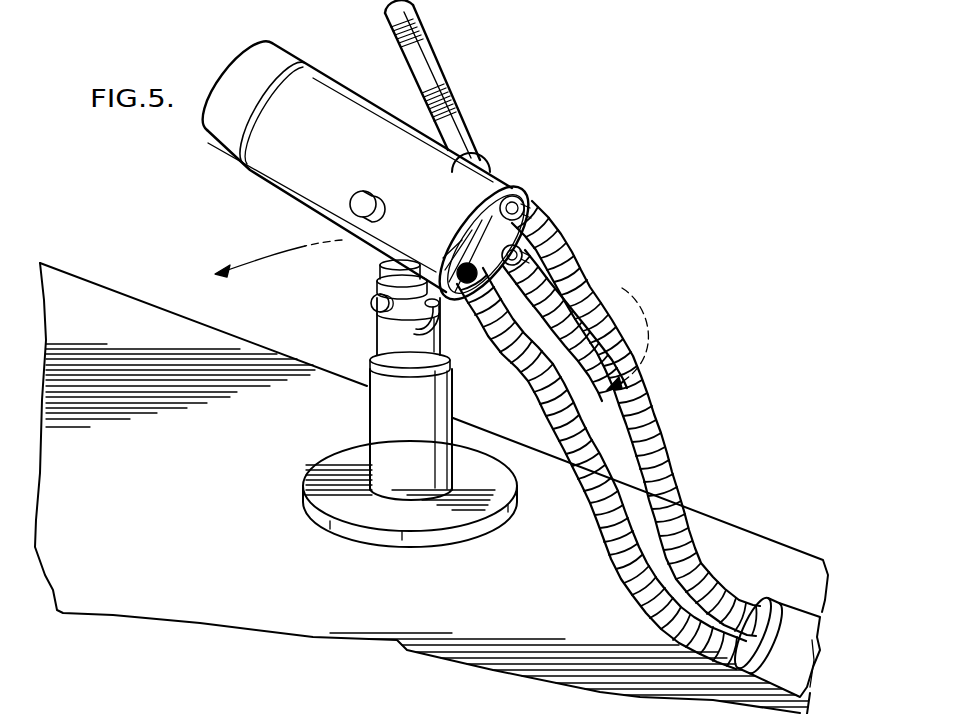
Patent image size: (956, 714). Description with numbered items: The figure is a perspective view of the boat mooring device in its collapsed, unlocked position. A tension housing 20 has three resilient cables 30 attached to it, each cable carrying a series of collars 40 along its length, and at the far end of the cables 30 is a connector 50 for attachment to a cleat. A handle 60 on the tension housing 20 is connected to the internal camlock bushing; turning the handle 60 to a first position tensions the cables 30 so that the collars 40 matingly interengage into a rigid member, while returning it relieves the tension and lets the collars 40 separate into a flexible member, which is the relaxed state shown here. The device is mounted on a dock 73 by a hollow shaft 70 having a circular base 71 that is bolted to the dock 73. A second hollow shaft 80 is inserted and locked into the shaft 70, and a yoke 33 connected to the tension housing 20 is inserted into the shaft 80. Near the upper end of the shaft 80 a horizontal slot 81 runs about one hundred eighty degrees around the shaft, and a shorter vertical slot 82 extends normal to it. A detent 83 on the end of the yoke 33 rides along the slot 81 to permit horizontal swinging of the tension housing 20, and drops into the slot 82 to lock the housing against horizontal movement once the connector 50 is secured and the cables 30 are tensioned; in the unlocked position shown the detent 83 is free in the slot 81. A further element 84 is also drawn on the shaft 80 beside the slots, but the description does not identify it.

The tension housing 20 is at (268, 186).
The resilient cables 30 is at (478, 277).
The yoke 33 is at (384, 262).
The collars 40 is at (580, 267).
The connector 50 is at (787, 596).
The handle 60 is at (423, 63).
The hollow shaft 70 is at (368, 421).
The circular base 71 is at (438, 515).
The dock 73 is at (311, 585).
The hollow shaft 80 is at (377, 339).
The slot 81 is at (377, 280).
The vertical slot 82 is at (448, 358).
The detent 83 is at (371, 305).
The clamp bracket 84 is at (418, 322).